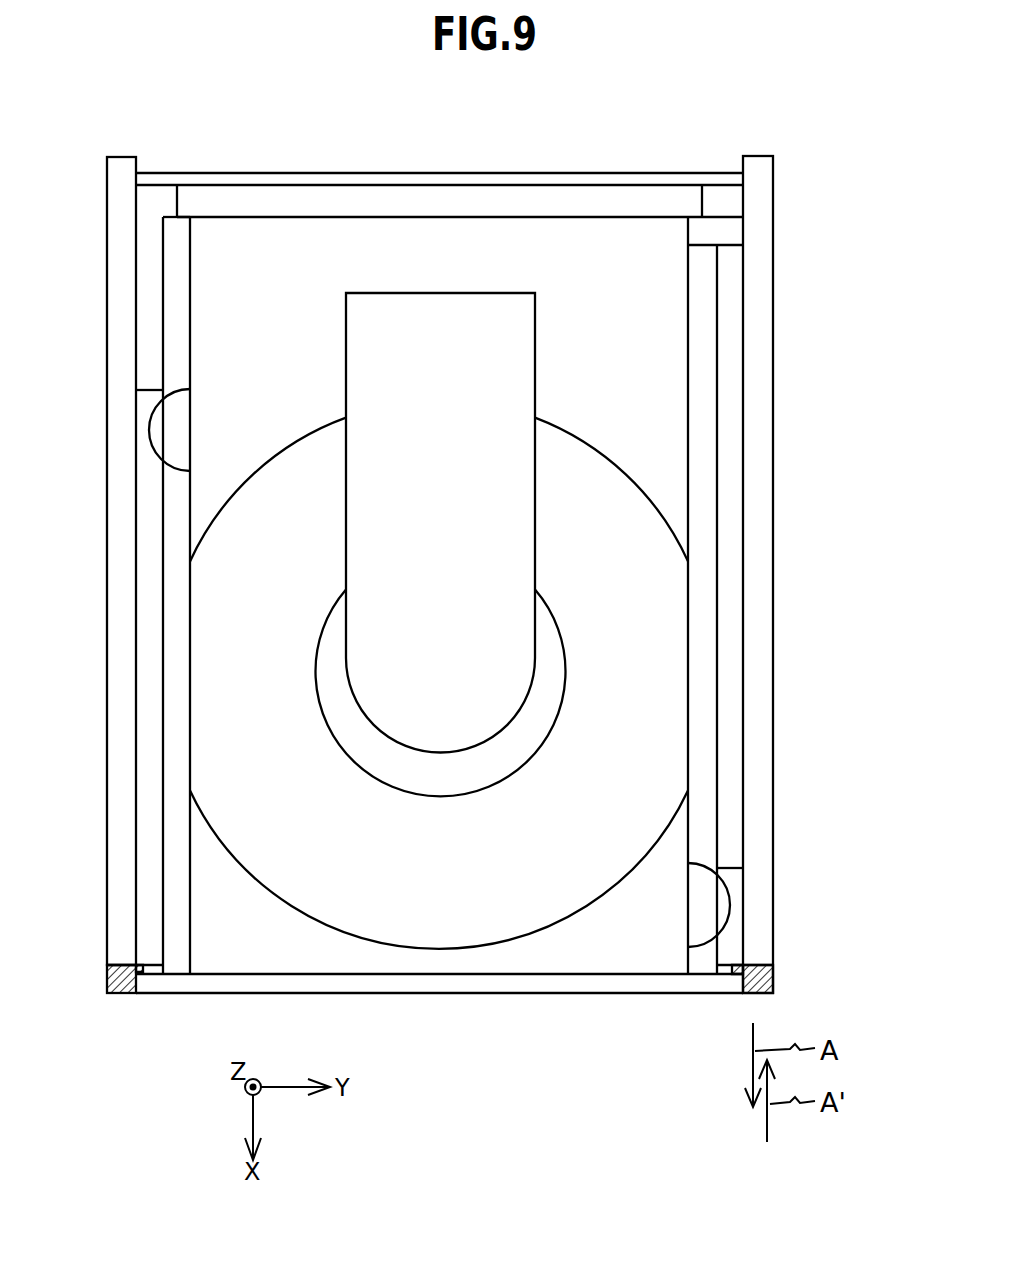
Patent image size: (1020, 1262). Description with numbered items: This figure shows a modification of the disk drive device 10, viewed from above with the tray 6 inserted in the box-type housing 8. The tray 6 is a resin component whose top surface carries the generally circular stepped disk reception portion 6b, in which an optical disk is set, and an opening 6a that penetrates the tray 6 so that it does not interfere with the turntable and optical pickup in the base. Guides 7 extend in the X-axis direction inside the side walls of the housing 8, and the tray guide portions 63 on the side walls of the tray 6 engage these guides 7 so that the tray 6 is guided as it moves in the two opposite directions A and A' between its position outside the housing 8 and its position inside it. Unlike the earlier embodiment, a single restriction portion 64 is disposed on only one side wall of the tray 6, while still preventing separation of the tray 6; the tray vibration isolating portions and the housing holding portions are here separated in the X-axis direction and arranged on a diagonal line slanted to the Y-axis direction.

The disk drive device 10 is at (832, 435).
The guide 7 is at (144, 196).
The housing 8 is at (120, 542).
The tray guide portion 63 is at (180, 757).
The restriction portion 64 is at (705, 233).
The tray 6 is at (457, 953).
The opening 6a is at (535, 564).
The disk reception portion 6b is at (668, 648).